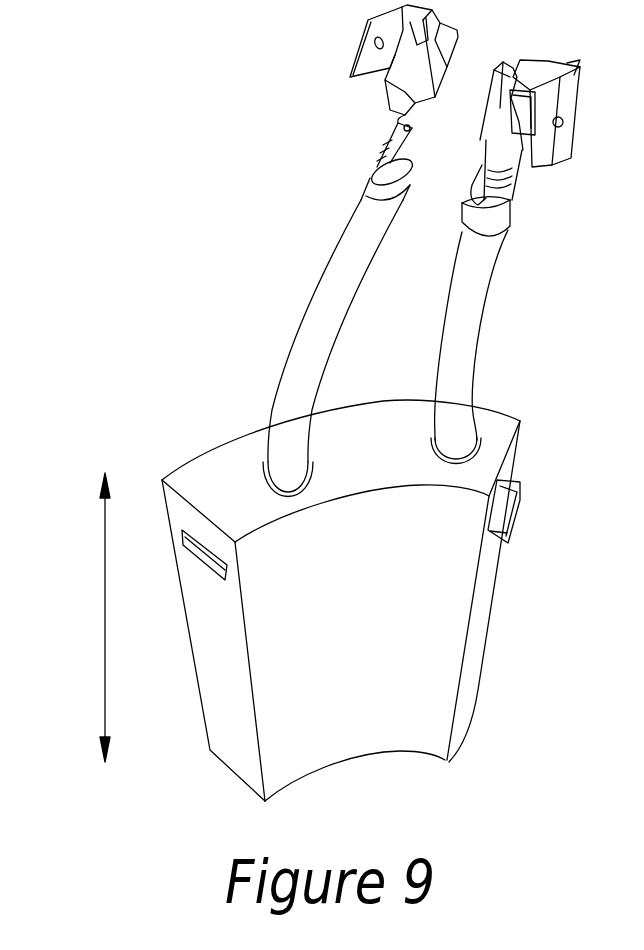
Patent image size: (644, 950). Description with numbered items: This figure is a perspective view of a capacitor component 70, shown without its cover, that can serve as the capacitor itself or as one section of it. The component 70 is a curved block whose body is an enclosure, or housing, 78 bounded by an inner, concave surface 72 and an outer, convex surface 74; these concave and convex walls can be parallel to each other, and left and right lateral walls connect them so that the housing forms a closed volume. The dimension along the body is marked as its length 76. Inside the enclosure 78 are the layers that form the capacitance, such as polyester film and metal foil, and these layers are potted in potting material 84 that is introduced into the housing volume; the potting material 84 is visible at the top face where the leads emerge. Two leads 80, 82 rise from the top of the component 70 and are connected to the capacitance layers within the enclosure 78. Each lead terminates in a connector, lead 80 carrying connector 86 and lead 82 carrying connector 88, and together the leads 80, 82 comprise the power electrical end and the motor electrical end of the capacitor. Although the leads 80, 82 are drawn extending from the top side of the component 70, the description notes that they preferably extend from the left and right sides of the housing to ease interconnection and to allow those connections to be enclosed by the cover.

The component 70 is at (330, 403).
The inner surface 72 is at (403, 686).
The outer surface 74 is at (222, 440).
The length 76 is at (105, 582).
The enclosure 78 is at (507, 465).
The lead 80 is at (332, 275).
The lead 82 is at (472, 308).
The potting material 84 is at (493, 433).
The connector 86 is at (402, 97).
The connector 88 is at (563, 152).